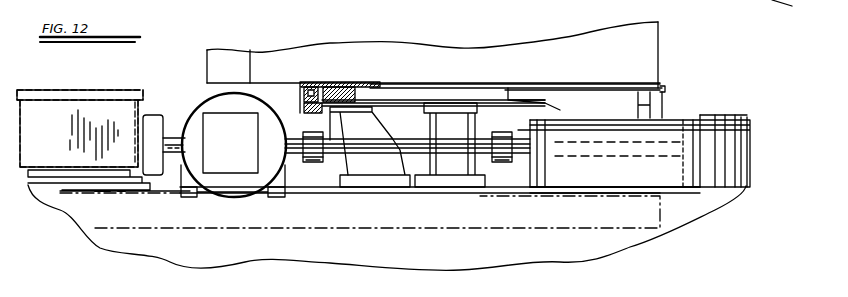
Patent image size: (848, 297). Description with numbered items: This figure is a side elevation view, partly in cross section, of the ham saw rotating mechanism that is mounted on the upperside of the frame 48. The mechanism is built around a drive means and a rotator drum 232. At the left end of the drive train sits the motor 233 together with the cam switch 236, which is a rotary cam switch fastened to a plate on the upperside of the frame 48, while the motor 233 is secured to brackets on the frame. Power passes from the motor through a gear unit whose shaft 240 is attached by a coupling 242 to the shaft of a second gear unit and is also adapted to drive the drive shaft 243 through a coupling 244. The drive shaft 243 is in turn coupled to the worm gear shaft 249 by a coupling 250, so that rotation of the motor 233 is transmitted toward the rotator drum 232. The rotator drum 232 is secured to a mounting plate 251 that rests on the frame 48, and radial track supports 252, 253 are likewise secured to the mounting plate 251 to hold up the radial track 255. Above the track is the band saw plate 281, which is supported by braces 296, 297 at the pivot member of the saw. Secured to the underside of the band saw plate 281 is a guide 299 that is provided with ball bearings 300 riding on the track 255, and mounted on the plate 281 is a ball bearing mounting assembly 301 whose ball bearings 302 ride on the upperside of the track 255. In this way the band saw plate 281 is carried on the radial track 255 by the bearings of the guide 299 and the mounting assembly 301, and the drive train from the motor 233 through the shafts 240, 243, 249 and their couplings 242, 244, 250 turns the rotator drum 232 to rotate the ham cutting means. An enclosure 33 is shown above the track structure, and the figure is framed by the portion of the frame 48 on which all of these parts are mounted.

The housing 33 is at (636, 58).
The frame 48 is at (432, 204).
The rotator drum 232 is at (709, 170).
The motor 233 is at (233, 182).
The cam switch 236 is at (63, 112).
The shaft 240 is at (179, 137).
The coupling 242 is at (153, 120).
The drive shaft 243 is at (489, 161).
The coupling 244 is at (316, 163).
The worm gear shaft 249 is at (517, 140).
The coupling 250 is at (509, 161).
The mounting plate 251 is at (660, 190).
The radial track support 252 is at (463, 165).
The radial track support 253 is at (370, 169).
The radial track 255 is at (412, 98).
The band saw plate 281 is at (664, 90).
The brace 296 is at (645, 114).
The brace 297 is at (586, 100).
The guide 299 is at (301, 105).
The ball bearings 300 is at (320, 109).
The ball bearing mounting assembly 301 is at (381, 87).
The ball bearings 302 is at (345, 90).